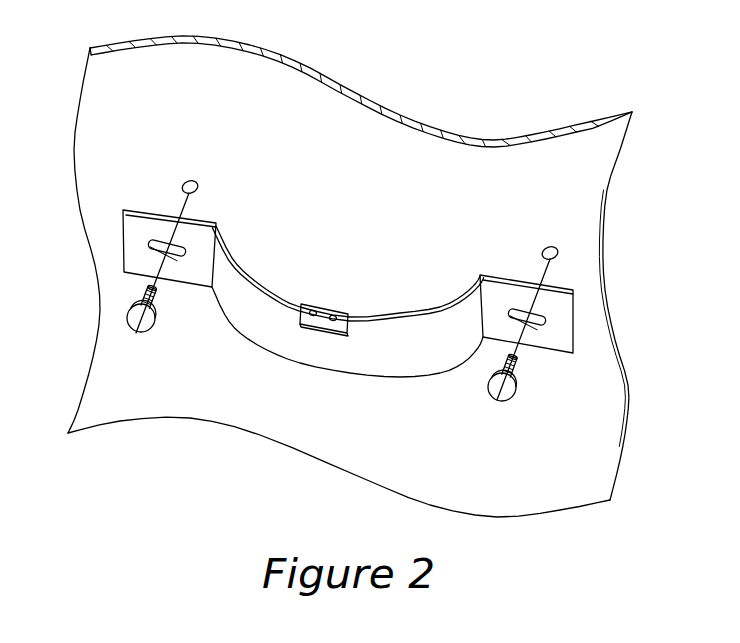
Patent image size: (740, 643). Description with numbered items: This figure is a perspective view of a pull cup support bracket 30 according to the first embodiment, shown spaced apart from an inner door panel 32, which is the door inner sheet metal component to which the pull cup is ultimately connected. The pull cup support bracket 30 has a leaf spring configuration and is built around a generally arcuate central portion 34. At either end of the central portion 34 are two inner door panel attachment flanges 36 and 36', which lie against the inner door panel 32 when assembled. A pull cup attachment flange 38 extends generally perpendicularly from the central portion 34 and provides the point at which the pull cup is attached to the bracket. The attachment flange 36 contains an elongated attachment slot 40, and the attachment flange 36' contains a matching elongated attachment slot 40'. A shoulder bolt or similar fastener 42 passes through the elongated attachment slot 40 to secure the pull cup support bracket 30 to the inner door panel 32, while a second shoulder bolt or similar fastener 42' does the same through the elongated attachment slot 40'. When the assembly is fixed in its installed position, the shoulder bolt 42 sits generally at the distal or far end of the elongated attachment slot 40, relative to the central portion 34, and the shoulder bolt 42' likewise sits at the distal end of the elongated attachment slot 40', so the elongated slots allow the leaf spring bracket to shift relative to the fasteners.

The pull cup support bracket 30 is at (268, 328).
The inner door panel 32 is at (358, 140).
The arcuate central portion 34 is at (378, 363).
The inner door panel attachment flange 36 is at (169, 210).
The inner door panel attachment flange 36' is at (539, 279).
The pull cup attachment flange 38 is at (327, 308).
The elongated attachment slot 40 is at (111, 237).
The elongated attachment slot 40' is at (555, 353).
The shoulder bolt 42 is at (161, 340).
The shoulder bolt 42' is at (524, 408).